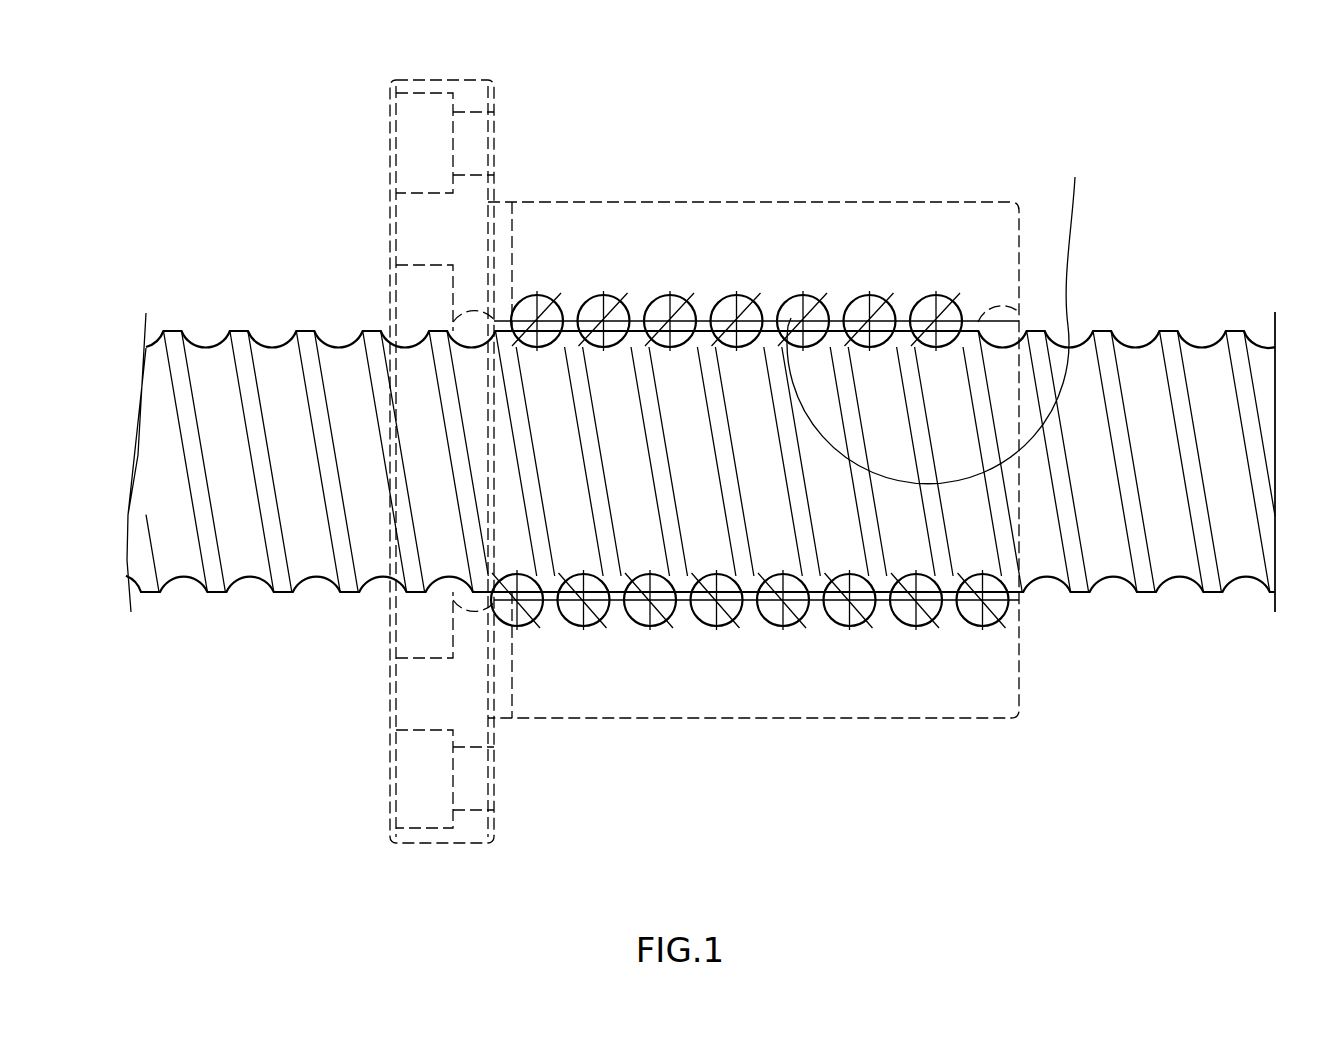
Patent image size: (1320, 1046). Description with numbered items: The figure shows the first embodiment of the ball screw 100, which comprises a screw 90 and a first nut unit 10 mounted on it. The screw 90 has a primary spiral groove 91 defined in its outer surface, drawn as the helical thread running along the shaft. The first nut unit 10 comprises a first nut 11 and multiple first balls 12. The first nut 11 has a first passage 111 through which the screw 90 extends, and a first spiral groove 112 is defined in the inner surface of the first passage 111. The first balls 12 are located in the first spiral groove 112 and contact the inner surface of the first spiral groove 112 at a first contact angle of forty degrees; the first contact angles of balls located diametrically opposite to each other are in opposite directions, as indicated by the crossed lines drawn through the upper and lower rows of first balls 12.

The first nut unit 10 is at (275, 120).
The ball screw 100 is at (1194, 120).
The first nut 11 is at (673, 202).
The first passage 111 is at (780, 295).
The first spiral groove 112 is at (830, 318).
The first balls 12 is at (941, 314).
The screw 90 is at (182, 530).
The primary spiral groove 91 is at (923, 576).